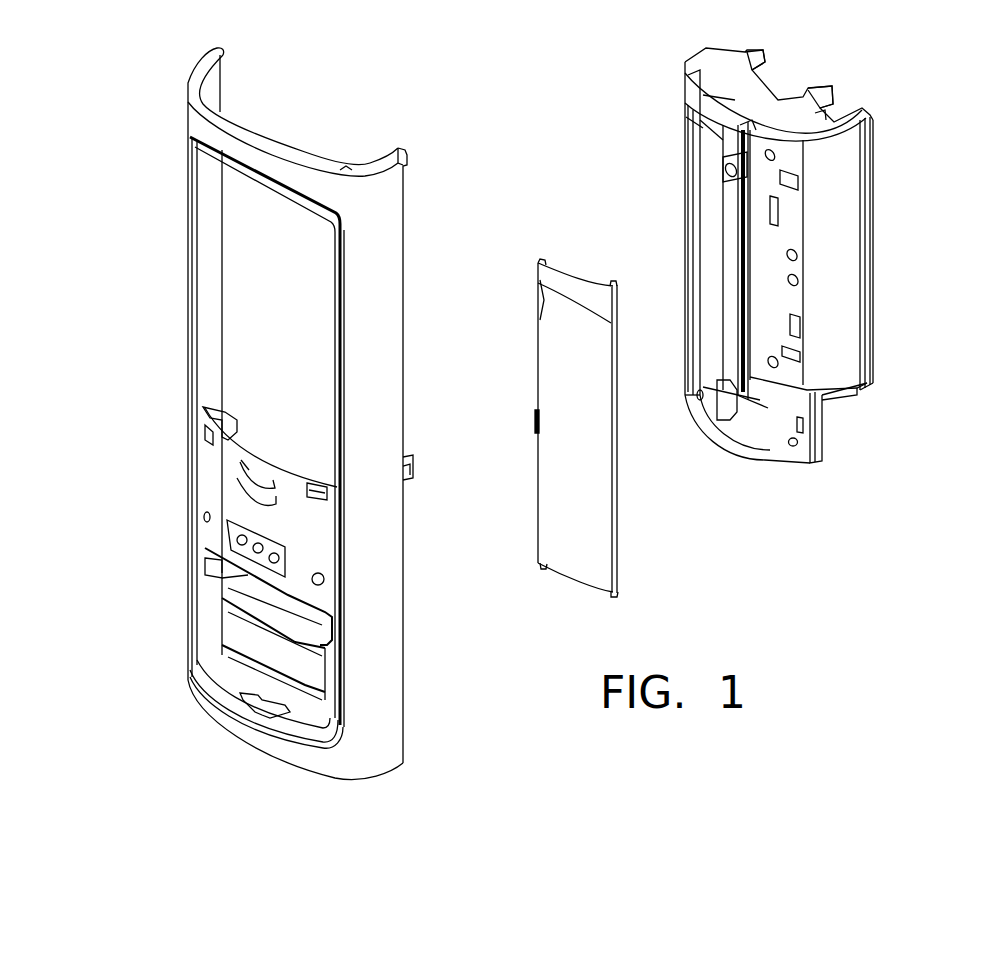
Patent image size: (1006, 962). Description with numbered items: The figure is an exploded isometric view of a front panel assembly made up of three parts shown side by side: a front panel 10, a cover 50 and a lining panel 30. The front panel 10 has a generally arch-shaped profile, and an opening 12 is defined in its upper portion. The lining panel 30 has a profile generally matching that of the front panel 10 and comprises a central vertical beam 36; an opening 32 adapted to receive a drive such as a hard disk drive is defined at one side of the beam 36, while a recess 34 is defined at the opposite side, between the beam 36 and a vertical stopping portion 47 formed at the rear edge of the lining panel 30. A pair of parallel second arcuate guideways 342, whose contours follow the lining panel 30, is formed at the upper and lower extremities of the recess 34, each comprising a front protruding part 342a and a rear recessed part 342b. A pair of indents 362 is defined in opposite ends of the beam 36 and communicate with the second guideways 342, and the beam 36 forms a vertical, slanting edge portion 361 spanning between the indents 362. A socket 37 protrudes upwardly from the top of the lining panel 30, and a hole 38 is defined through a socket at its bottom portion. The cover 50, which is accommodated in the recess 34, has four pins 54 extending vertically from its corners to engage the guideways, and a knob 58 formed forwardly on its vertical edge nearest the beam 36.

The front panel 10 is at (163, 424).
The opening 12 is at (260, 227).
The lining panel 30 is at (800, 285).
The opening 32 is at (713, 187).
The recess 34 is at (790, 83).
The central vertical beam 36 is at (681, 260).
The edge portion 361 is at (747, 200).
The indents 362 is at (778, 143).
The socket 37 is at (820, 108).
The hole 38 is at (795, 450).
The second arcuate guideways 342 is at (791, 464).
The front protruding part 342a is at (748, 392).
The rear recessed part 342b is at (857, 388).
The vertical stopping portion 47 is at (873, 220).
The cover 50 is at (517, 417).
The pins 54 is at (538, 262).
The knob 58 is at (498, 430).